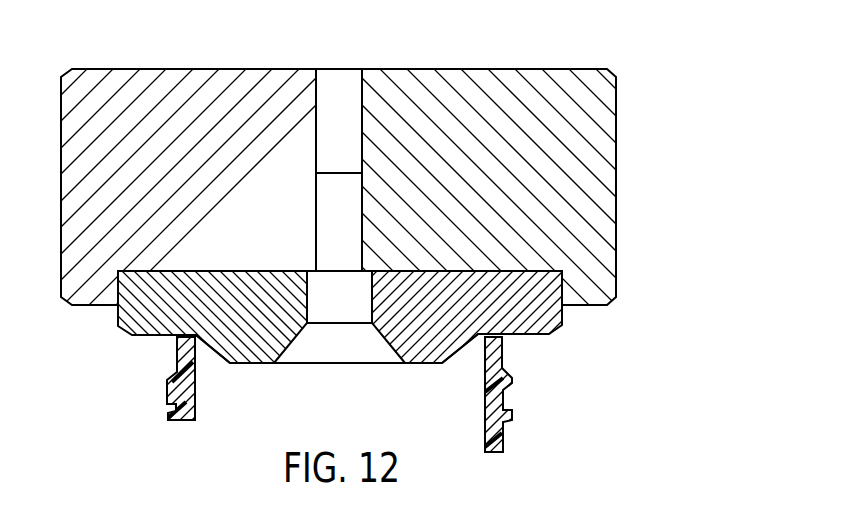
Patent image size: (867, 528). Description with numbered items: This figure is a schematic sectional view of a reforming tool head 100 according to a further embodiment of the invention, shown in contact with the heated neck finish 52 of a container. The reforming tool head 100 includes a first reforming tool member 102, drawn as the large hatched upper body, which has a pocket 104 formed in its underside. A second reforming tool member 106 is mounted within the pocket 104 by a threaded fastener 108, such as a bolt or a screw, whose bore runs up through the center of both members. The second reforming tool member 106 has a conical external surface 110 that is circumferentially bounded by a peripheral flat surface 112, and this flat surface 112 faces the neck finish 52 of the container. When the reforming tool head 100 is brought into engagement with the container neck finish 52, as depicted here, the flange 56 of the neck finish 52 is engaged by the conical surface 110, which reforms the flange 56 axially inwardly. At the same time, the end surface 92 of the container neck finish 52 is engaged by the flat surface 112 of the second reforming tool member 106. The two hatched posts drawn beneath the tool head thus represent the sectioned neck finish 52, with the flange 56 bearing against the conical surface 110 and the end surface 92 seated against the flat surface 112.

The reforming tool head 100 is at (686, 126).
The first reforming tool member 102 is at (604, 119).
The pocket 104 is at (508, 272).
The second reforming tool member 106 is at (127, 316).
The threaded fastener 108 is at (340, 354).
The conical external surface 110 is at (217, 353).
The peripheral flat surface 112 is at (155, 337).
The flange 56 is at (472, 348).
The end surface 92 is at (499, 333).
The neck finish 52 is at (505, 406).